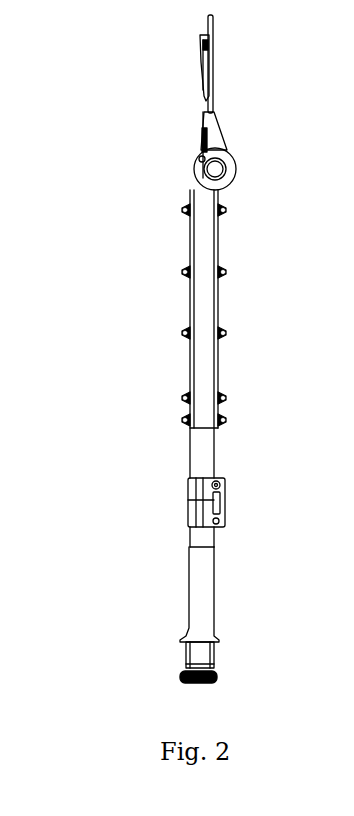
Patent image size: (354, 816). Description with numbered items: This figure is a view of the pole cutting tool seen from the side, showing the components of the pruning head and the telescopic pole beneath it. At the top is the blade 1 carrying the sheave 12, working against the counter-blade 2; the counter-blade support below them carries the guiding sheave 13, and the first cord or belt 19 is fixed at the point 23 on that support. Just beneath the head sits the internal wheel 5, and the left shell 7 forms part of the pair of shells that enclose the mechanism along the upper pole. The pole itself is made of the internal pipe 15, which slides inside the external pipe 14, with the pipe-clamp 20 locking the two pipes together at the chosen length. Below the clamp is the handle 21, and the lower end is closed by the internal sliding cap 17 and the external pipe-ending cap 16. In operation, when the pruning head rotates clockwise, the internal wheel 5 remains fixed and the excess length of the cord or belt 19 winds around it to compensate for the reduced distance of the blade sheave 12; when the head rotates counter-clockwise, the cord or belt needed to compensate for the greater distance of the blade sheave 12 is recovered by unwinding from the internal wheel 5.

The blade 1 is at (205, 27).
The counter-blade 2 is at (214, 27).
The sheave 12 is at (205, 45).
The point 23 is at (205, 113).
The guiding sheave 13 is at (205, 137).
The first cord or belt 19 is at (202, 159).
The internal wheel 5 is at (222, 167).
The left shell 7 is at (220, 210).
The internal pipe 15 is at (214, 453).
The pipe-clamp 20 is at (190, 499).
The external pipe 14 is at (217, 537).
The handle 21 is at (189, 578).
The internal sliding cap 17 is at (200, 657).
The external pipe-ending cap 16 is at (183, 677).